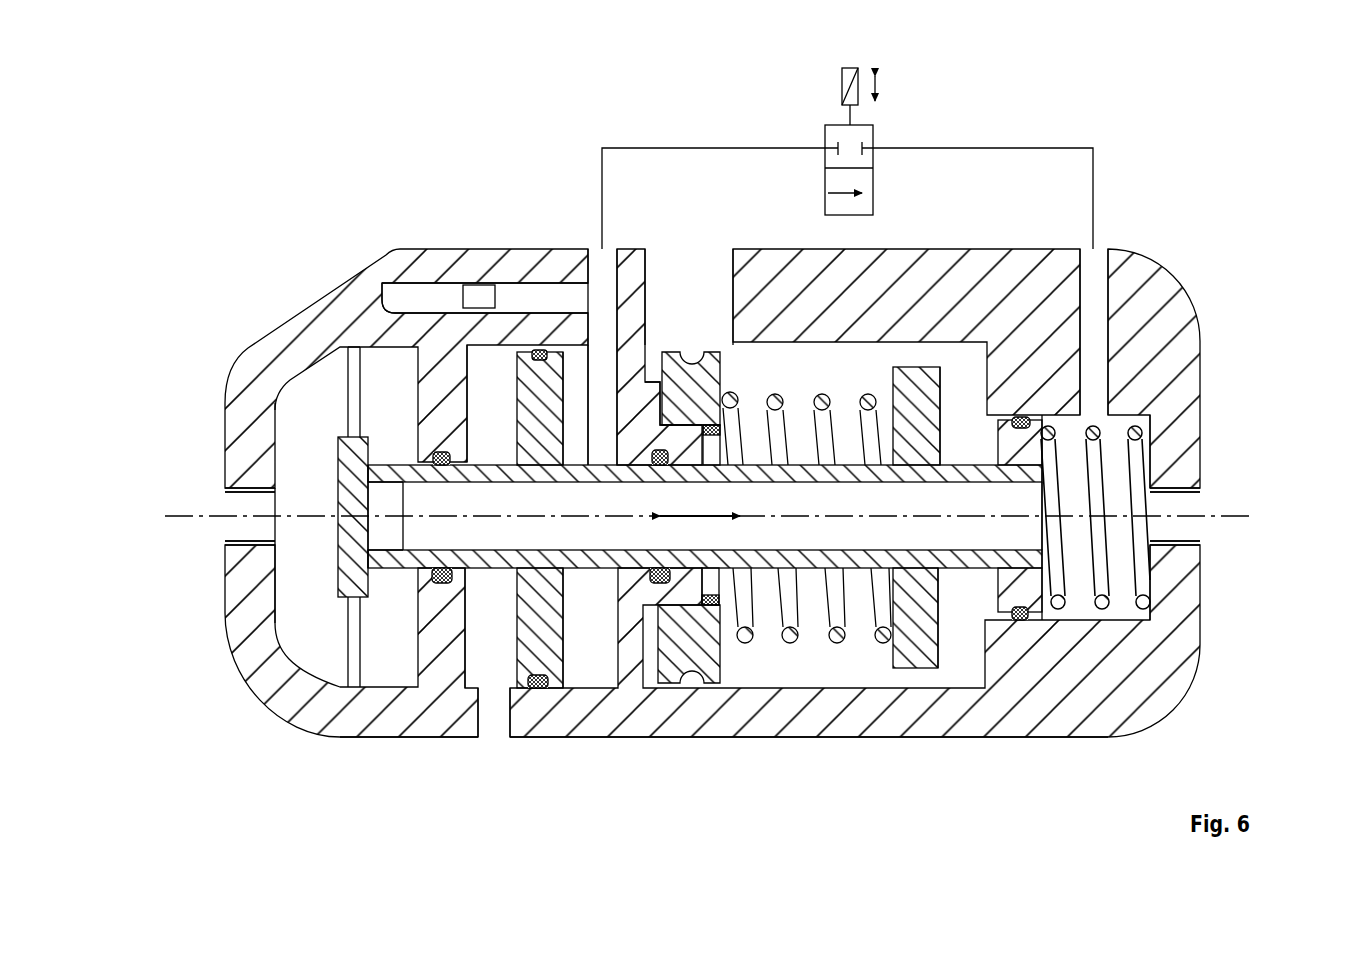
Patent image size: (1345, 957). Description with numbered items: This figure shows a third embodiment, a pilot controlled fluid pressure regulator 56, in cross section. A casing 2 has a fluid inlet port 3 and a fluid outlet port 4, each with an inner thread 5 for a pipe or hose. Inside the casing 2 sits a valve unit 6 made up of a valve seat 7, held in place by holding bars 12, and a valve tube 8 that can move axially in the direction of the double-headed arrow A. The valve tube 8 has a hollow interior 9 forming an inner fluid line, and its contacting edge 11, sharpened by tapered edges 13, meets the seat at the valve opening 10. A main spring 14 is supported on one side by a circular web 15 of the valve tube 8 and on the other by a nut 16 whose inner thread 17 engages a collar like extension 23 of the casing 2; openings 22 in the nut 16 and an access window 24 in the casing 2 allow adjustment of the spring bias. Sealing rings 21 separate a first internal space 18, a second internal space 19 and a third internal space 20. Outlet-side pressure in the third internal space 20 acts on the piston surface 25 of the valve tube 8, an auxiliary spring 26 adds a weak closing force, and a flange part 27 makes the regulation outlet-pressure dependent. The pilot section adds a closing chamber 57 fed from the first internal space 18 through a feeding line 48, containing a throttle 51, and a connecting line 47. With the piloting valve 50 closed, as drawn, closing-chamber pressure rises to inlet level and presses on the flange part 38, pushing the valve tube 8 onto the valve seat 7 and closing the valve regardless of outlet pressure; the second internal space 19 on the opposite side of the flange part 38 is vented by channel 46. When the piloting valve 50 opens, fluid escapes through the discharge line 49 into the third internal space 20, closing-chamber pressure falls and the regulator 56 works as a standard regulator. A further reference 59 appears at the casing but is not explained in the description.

The casing 2 is at (1133, 245).
The fluid inlet port 3 is at (232, 505).
The fluid outlet port 4 is at (1178, 510).
The inner thread 5 is at (245, 540).
The valve unit 6 is at (325, 460).
The valve seat 7 is at (340, 445).
The valve tube 8 is at (968, 574).
The hollow interior 9 is at (970, 510).
The valve opening 10 is at (387, 436).
The contacting edge 11 is at (384, 553).
The holding bars 12 is at (352, 387).
The tapered edges 13 is at (405, 550).
The main spring 14 is at (792, 610).
The circular web 15 is at (918, 645).
The nut 16 is at (713, 347).
The inner thread 17 is at (655, 425).
The first internal space 18 is at (319, 633).
The second internal space 19 is at (479, 632).
The third internal space 20 is at (1060, 470).
The sealing rings 21 is at (441, 584).
The openings 22 is at (712, 426).
The collar like extension 23 is at (692, 655).
The access window 24 is at (703, 252).
The piston surface 25 is at (1056, 600).
The auxiliary spring 26 is at (1110, 605).
The flange part 27 is at (1008, 598).
The flange part 38 is at (556, 645).
The channel 46 is at (496, 706).
The connecting line 47 is at (598, 275).
The feeding line 48 is at (440, 300).
The discharge line 49 is at (1090, 320).
The piloting valve 50 is at (873, 138).
The throttle 51 is at (478, 296).
The pilot controlled fluid pressure regulator 56 is at (728, 458).
The closing chamber 57 is at (575, 632).
The bottom wall 59 is at (568, 744).
The double-headed arrow A is at (705, 528).